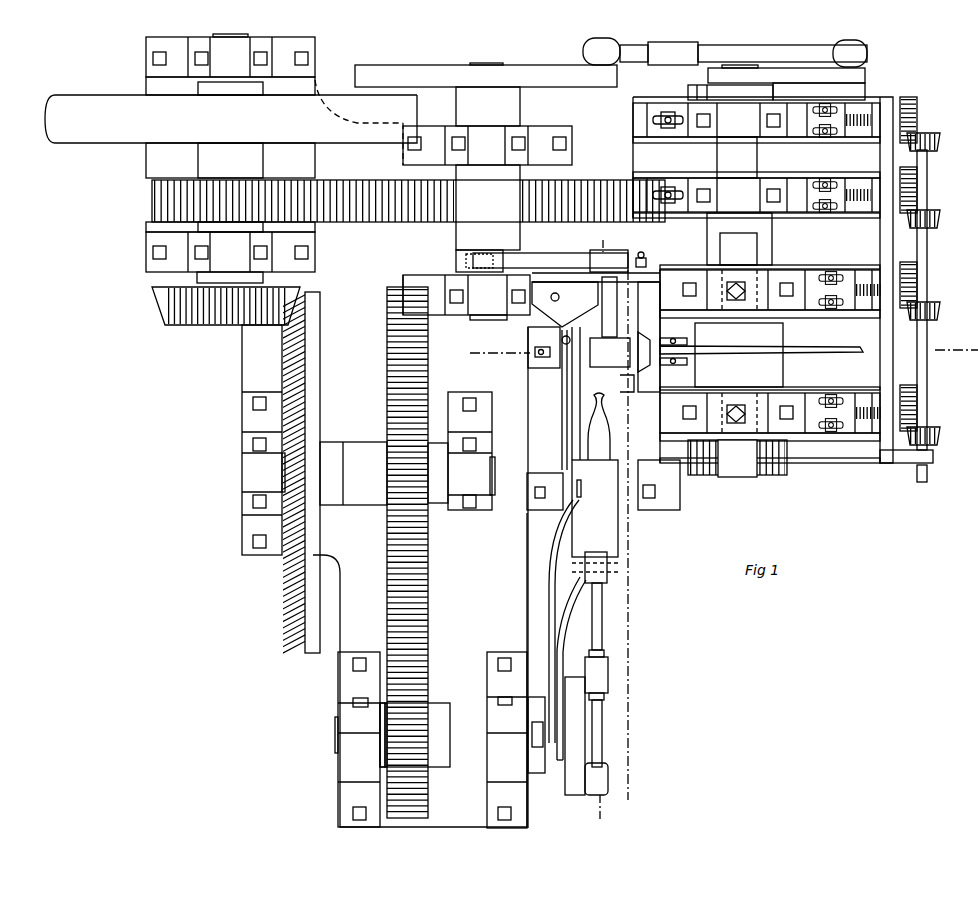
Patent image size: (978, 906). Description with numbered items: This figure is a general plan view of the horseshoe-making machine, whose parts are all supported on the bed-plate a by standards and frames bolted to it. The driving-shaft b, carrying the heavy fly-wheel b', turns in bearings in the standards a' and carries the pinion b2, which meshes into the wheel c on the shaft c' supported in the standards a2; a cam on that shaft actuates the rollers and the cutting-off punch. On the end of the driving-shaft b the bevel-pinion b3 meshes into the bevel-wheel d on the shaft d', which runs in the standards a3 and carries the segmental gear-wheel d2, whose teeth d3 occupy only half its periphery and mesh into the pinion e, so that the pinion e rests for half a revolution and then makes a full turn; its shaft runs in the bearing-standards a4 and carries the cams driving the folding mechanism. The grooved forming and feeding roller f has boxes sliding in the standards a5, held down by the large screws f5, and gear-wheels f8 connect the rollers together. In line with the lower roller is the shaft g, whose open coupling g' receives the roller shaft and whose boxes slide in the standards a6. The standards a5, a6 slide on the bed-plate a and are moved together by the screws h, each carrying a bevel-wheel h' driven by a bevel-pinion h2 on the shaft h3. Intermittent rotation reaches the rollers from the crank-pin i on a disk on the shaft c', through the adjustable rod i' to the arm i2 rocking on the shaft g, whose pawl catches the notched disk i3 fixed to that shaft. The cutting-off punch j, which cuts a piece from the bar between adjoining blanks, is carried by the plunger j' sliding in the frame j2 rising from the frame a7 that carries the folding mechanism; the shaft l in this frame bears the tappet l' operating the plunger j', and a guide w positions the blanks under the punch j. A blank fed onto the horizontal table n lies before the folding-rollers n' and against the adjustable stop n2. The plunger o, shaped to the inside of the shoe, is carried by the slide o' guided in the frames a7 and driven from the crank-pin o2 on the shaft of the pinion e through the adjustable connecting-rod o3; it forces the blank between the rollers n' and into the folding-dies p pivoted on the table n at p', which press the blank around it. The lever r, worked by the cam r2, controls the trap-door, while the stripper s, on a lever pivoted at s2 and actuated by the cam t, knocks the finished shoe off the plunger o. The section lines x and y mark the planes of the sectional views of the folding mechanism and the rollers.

The bed-plate a is at (623, 462).
The standards a' is at (230, 153).
The standards a2 is at (487, 223).
The standards a3 is at (375, 451).
The bearing-standards a4 is at (431, 740).
The standards a5 is at (770, 351).
The standards a6 is at (756, 157).
The frame a7 is at (603, 418).
The driving-shaft b is at (230, 160).
The fly-wheel b' is at (231, 122).
The pinion b2 is at (304, 201).
The bevel-pinion b3 is at (226, 308).
The wheel c is at (573, 201).
The shaft c' is at (486, 146).
The bevel-wheel d is at (340, 472).
The shaft d' is at (252, 440).
The segmental gear-wheel d2 is at (396, 552).
The teeth d3 is at (422, 473).
The pinion e is at (415, 728).
The forming and feeding roller f is at (761, 355).
The screws f5 is at (744, 355).
The gear-wheels f8 is at (744, 458).
The shaft g is at (737, 157).
The open coupling g' is at (739, 239).
The screws h is at (863, 279).
The bevel-wheel h' is at (914, 264).
The bevel-pinions h2 is at (935, 289).
The shaft h3 is at (945, 326).
The crank-pin i is at (615, 42).
The connecting-rod i' is at (757, 47).
The arm i2 is at (669, 168).
The disk i3 is at (651, 177).
The cutting-off punch j is at (649, 337).
The plunger j' is at (646, 347).
The frame j2 is at (626, 382).
The shaft l is at (609, 307).
The tappet l' is at (610, 352).
The horizontal table n is at (544, 346).
The folding-rollers n' is at (575, 335).
The adjustable stop n2 is at (543, 358).
The plunger o is at (599, 426).
The slide o' is at (595, 521).
The crank-pin o2 is at (598, 736).
The connecting-rod o3 is at (606, 675).
The folding-dies p is at (565, 304).
The pivots p' is at (565, 291).
The lever r is at (571, 668).
The cam r2 is at (555, 757).
The stripper s is at (563, 526).
The pivot s2 is at (585, 486).
The cam t is at (536, 735).
The guide w is at (673, 357).
The section line x x is at (610, 533).
The section line y y is at (492, 352).